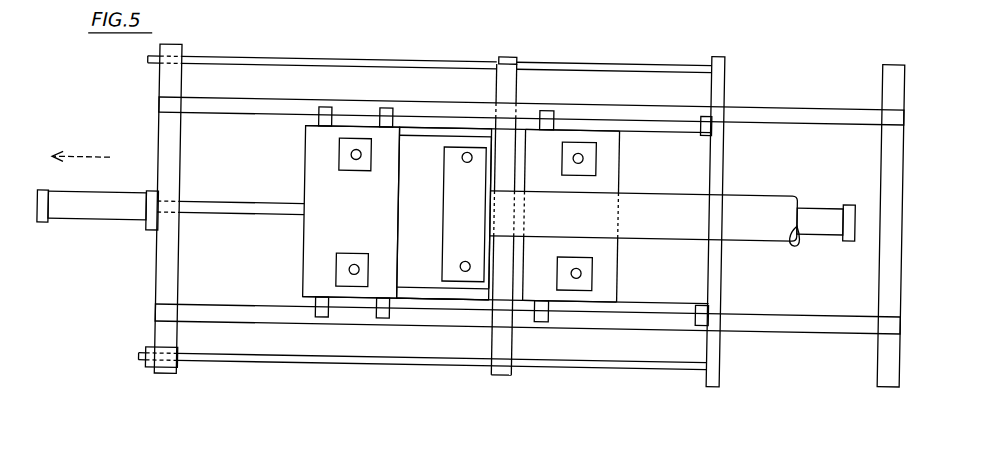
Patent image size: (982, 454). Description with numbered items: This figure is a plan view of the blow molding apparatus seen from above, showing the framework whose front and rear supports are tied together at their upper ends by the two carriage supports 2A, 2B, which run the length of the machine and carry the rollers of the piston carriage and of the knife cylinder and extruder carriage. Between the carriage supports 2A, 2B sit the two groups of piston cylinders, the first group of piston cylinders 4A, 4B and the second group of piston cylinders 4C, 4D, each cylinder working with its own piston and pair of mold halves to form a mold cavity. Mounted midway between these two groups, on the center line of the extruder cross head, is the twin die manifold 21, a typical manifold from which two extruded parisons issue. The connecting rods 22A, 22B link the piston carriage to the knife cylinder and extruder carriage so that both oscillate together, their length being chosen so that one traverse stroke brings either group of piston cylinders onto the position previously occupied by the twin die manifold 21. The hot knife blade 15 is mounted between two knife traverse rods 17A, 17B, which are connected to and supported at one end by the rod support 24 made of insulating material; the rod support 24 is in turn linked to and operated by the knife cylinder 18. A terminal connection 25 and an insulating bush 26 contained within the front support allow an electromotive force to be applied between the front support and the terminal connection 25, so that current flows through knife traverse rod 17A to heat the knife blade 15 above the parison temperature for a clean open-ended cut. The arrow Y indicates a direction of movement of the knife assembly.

The carriage support 2A is at (757, 324).
The carriage support 2B is at (758, 108).
The piston cylinder 4A is at (338, 276).
The piston cylinder 4B is at (338, 144).
The piston cylinder 4C is at (574, 284).
The piston cylinder 4D is at (574, 142).
The knife blade 15 is at (497, 339).
The knife traverse rod 17A is at (532, 64).
The knife traverse rod 17B is at (312, 363).
The knife cylinder 18 is at (802, 222).
The twin die manifold 21 is at (450, 148).
The connecting rod 22A is at (480, 134).
The connecting rod 22B is at (474, 294).
The rod support 24 is at (716, 364).
The terminal connection 25 is at (506, 373).
The insulating bush 26 is at (174, 370).
The direction arrow Y is at (89, 156).